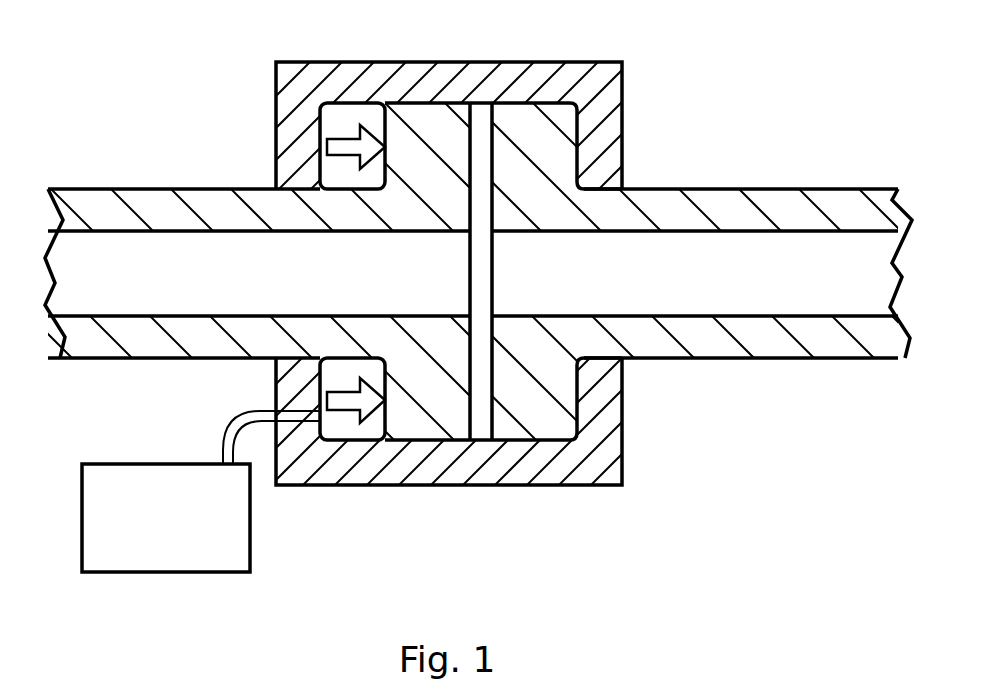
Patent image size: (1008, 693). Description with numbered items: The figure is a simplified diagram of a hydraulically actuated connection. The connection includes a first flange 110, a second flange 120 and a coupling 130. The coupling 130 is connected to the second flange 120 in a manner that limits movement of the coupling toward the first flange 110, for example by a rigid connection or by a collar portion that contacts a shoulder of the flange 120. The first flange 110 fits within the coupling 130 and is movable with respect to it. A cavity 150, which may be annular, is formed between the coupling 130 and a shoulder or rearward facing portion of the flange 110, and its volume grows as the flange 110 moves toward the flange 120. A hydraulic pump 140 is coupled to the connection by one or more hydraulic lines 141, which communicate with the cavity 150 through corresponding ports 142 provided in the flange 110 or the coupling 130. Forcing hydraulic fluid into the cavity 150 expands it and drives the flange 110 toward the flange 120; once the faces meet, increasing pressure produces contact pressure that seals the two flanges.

The first flange 110 is at (147, 188).
The second flange 120 is at (750, 189).
The coupling 130 is at (437, 62).
The hydraulic pump 140 is at (142, 572).
The hydraulic lines 141 is at (225, 442).
The ports 142 is at (275, 411).
The cavity 150 is at (343, 113).